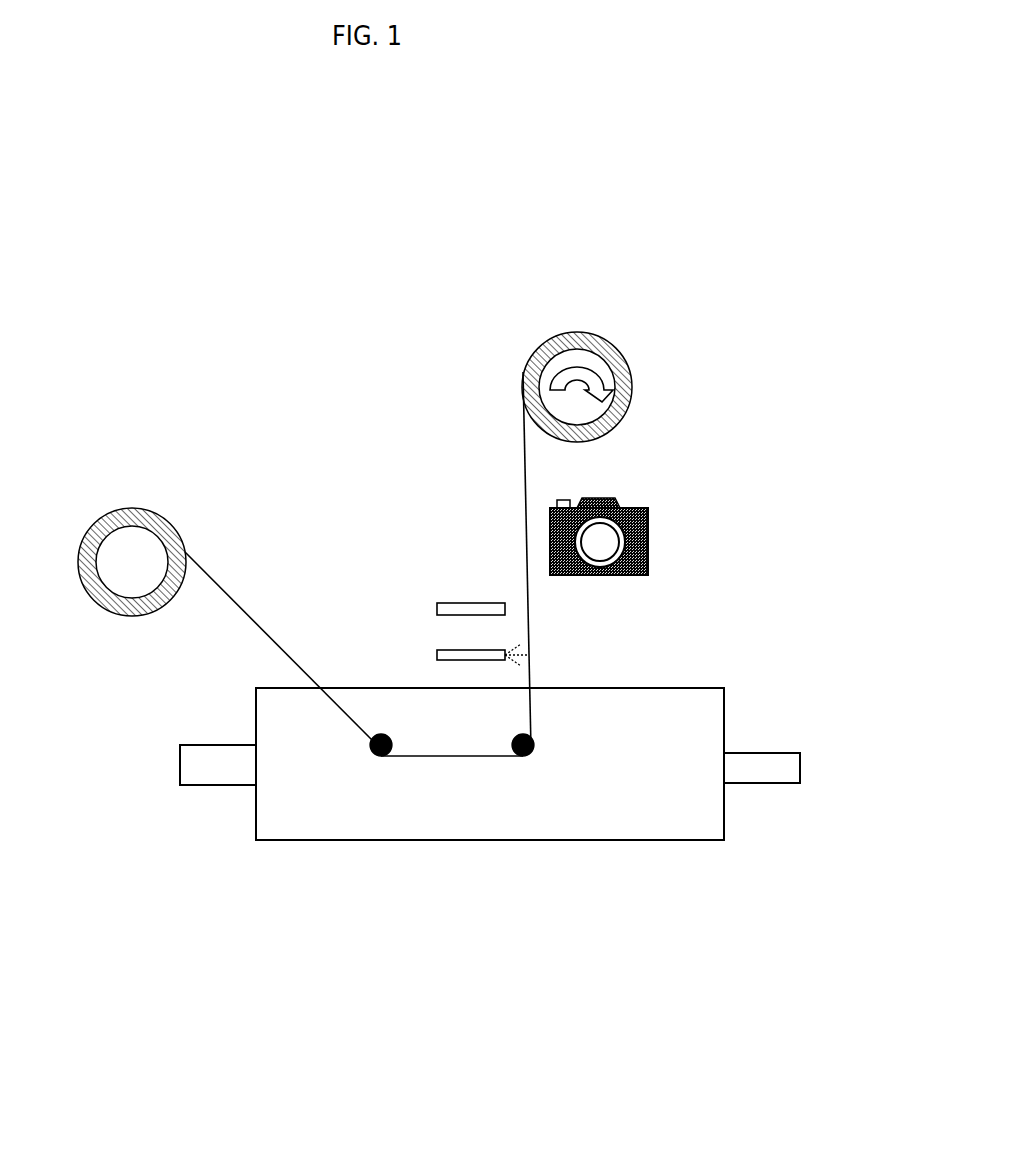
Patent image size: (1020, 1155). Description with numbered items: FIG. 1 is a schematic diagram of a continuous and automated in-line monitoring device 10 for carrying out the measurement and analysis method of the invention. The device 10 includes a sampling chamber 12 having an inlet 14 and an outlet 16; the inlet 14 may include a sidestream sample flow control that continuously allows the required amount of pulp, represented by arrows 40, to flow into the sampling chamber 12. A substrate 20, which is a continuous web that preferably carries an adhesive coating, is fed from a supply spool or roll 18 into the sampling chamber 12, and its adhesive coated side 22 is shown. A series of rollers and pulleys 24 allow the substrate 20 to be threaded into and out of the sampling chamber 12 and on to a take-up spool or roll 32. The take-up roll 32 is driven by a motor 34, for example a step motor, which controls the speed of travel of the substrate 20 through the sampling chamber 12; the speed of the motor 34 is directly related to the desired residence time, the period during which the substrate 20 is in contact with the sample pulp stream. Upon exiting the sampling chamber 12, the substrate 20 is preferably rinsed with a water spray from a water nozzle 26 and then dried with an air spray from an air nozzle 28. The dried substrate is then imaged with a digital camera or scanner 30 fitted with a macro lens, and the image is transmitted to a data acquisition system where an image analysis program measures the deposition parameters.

The in-line monitoring device 10 is at (203, 466).
The sampling chamber 12 is at (373, 853).
The inlet 14 is at (193, 719).
The outlet 16 is at (783, 740).
The supply spool or roll 18 is at (80, 509).
The substrate 20 is at (235, 600).
The adhesive coated side 22 is at (216, 618).
The rollers and pulleys 24 is at (543, 765).
The water nozzle 26 is at (422, 642).
The air nozzle 28 is at (464, 588).
The digital camera or scanner 30 is at (668, 532).
The take-up spool or roll 32 is at (521, 343).
The motor 34 is at (605, 371).
The pulp flow arrows 40 is at (160, 772).